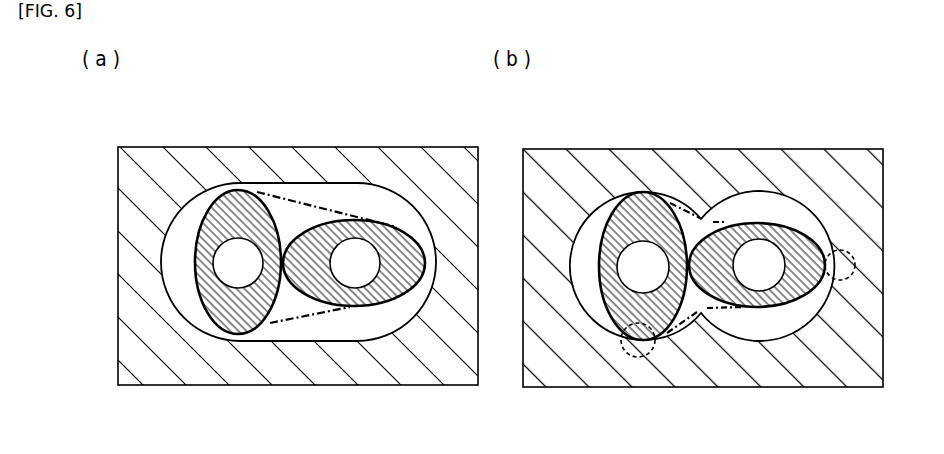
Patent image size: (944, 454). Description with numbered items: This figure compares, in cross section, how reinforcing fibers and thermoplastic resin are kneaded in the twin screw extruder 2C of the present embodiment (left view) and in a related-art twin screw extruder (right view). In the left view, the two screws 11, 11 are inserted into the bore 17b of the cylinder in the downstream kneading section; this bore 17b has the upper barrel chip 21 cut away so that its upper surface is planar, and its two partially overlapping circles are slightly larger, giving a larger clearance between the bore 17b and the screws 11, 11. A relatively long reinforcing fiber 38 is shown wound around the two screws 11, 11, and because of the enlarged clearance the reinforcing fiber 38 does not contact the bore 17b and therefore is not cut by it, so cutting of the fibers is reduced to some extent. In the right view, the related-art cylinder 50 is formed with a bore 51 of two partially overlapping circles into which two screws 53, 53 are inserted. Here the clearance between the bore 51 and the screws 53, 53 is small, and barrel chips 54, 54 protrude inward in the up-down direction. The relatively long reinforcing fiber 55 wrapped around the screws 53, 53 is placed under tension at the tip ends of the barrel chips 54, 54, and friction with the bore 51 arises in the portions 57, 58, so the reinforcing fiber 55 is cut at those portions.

The twin screw extruder 2C is at (385, 148).
The bore 17b is at (181, 211).
The screw 11 is at (223, 333).
The reinforcing fiber 38 is at (292, 203).
The barrel chip 21 is at (300, 320).
The cylinder 50 is at (802, 152).
The bore 51 is at (574, 237).
The screw 53 is at (627, 323).
The barrel chip 54 is at (702, 219).
The reinforcing fiber 55 is at (713, 223).
The friction portion 57 is at (840, 290).
The friction portion 58 is at (638, 357).